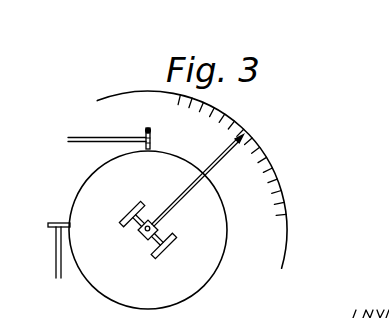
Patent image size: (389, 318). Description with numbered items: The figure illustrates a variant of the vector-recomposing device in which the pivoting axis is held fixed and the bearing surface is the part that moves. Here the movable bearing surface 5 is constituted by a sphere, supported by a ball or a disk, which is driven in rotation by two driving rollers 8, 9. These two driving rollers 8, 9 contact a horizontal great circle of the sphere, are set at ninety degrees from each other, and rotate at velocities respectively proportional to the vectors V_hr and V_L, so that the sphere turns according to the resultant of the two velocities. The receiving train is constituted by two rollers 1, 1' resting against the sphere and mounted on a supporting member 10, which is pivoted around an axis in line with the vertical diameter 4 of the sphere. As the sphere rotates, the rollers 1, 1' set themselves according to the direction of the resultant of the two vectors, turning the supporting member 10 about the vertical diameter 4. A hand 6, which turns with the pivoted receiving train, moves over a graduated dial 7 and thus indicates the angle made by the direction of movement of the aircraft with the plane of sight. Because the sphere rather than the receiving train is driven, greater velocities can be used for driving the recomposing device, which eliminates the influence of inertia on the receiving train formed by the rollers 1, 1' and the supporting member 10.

The roller 1 is at (124, 212).
The roller 1' is at (168, 248).
The pivoting axis 4 is at (142, 237).
The bearing surface 5 is at (175, 298).
The hand 6 is at (178, 199).
The graduated dial 7 is at (270, 171).
The driving roller 8 is at (153, 138).
The driving roller 9 is at (55, 222).
The supporting member 10 is at (143, 231).